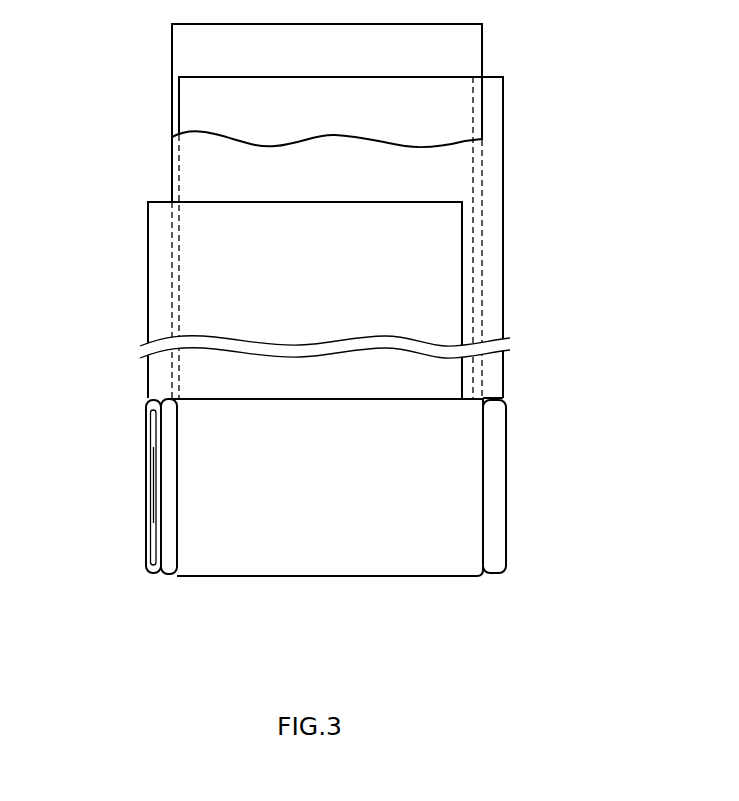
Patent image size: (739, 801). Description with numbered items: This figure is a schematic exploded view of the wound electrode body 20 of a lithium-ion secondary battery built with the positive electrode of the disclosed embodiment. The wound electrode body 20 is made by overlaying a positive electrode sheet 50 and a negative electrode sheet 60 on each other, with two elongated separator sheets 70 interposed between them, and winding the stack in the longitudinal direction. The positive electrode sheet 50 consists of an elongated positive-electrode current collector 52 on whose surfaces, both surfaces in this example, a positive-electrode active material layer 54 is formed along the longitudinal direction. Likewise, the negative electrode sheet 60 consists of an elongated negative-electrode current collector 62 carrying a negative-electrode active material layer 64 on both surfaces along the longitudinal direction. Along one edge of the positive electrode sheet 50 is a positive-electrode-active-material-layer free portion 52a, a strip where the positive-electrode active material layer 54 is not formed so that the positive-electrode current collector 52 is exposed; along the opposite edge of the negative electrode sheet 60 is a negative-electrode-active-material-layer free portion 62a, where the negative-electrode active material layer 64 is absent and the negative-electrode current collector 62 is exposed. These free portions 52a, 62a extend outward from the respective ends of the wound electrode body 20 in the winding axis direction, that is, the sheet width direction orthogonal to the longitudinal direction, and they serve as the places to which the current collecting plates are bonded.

The wound electrode body 20 is at (383, 557).
The positive electrode sheet 50 is at (148, 268).
The positive-electrode current collector 52 is at (147, 328).
The positive-electrode-active-material-layer free portion 52a is at (163, 298).
The positive-electrode active material layer 54 is at (205, 218).
The negative electrode sheet 60 is at (503, 150).
The negative-electrode current collector 62 is at (503, 243).
The negative-electrode-active-material-layer free portion 62a is at (490, 215).
The negative-electrode active material layer 64 is at (472, 100).
The separator sheet 70 is at (190, 43).